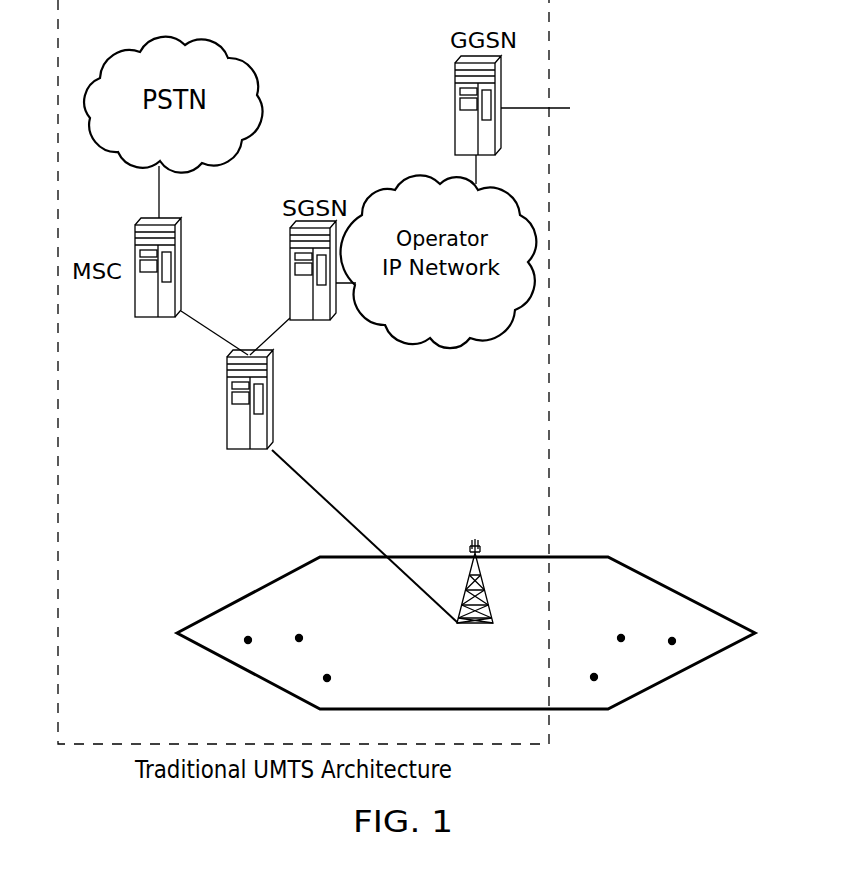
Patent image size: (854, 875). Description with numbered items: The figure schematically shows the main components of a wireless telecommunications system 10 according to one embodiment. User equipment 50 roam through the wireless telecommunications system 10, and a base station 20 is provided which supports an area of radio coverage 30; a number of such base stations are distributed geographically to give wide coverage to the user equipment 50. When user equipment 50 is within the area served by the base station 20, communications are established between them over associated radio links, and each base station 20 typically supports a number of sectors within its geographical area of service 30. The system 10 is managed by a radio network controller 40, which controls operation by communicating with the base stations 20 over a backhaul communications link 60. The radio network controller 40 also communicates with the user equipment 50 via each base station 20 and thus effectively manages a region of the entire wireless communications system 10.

The wireless telecommunications system 10 is at (620, 13).
The base station 20 is at (465, 585).
The area of radio coverage 30 is at (653, 580).
The radio network controller 40 is at (226, 418).
The user equipment 50 is at (327, 678).
The backhaul communications link 60 is at (312, 487).